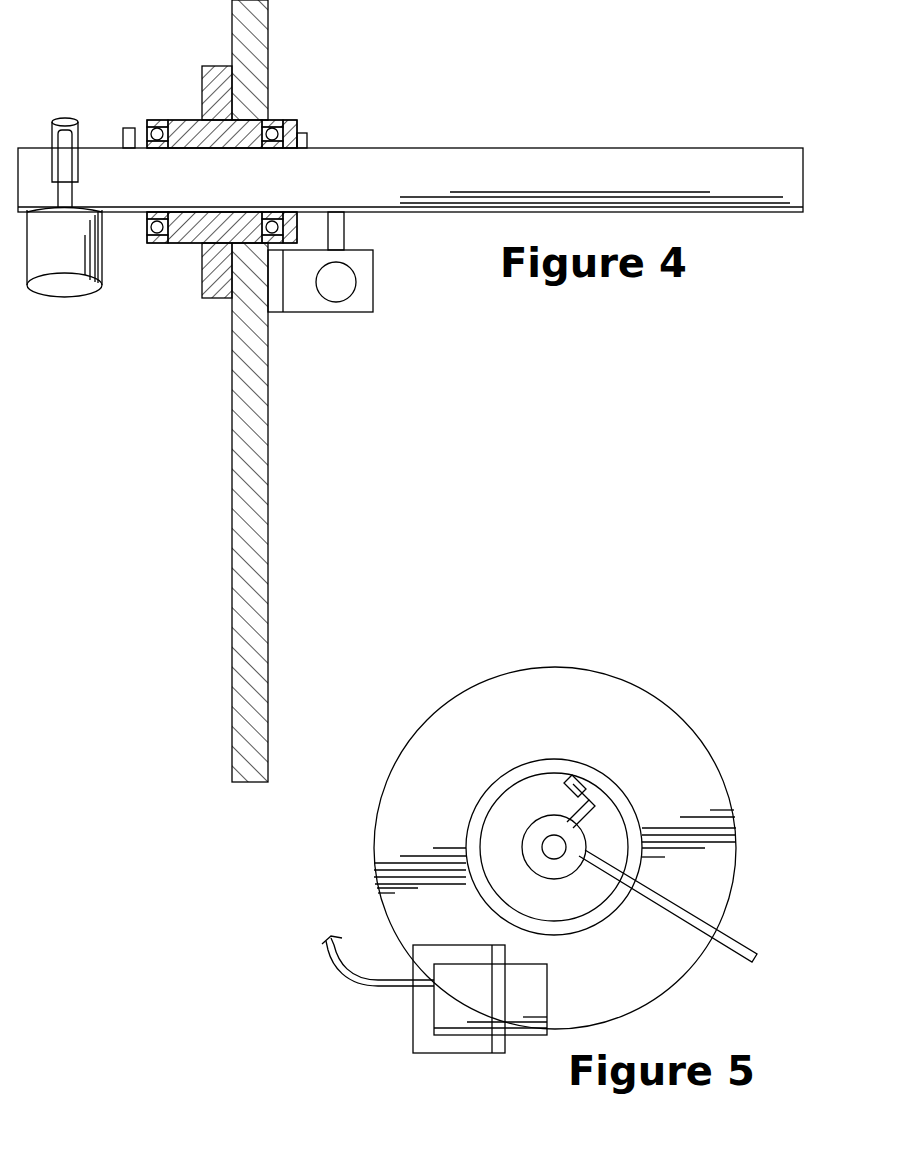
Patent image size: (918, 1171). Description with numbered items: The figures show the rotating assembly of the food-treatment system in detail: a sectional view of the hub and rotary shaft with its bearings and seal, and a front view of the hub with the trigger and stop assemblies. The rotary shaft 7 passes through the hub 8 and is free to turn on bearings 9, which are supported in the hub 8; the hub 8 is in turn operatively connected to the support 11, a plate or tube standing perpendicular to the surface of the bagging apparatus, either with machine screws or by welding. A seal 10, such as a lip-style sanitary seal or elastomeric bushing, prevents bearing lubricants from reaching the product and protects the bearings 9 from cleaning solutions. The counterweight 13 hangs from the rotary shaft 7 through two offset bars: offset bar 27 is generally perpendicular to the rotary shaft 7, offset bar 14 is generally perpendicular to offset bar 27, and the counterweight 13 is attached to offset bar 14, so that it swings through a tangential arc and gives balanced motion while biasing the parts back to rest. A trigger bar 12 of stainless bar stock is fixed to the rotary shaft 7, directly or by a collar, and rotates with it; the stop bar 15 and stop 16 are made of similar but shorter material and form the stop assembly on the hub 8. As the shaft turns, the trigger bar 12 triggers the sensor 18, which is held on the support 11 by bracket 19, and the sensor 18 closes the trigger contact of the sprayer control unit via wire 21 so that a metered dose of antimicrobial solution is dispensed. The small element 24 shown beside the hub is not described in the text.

In FIG. 4, the rotary shaft 7 is at (439, 148).
In FIG. 5, the rotary shaft 7 is at (524, 836).
In FIG. 4, the hub 8 is at (202, 76).
In FIG. 5, the hub 8 is at (553, 668).
In FIG. 4, the bearings 9 is at (155, 149).
In FIG. 4, the seal 10 is at (298, 130).
In FIG. 4, the support 11 is at (268, 24).
In FIG. 4, the trigger bar 12 is at (345, 230).
In FIG. 5, the trigger bar 12 is at (748, 950).
In FIG. 4, the counterweight 13 is at (65, 298).
In FIG. 4, the offset bar 14 is at (72, 194).
In FIG. 5, the stop bar 15 is at (592, 804).
In FIG. 5, the stop 16 is at (556, 778).
In FIG. 4, the sensor 18 is at (373, 281).
In FIG. 5, the sensor 18 is at (547, 998).
In FIG. 4, the bracket 19 is at (336, 302).
In FIG. 5, the bracket 19 is at (460, 1053).
In FIG. 5, the wire 21 is at (380, 990).
In FIG. 4, the stop pin 24 is at (126, 128).
In FIG. 4, the offset bar 27 is at (52, 124).